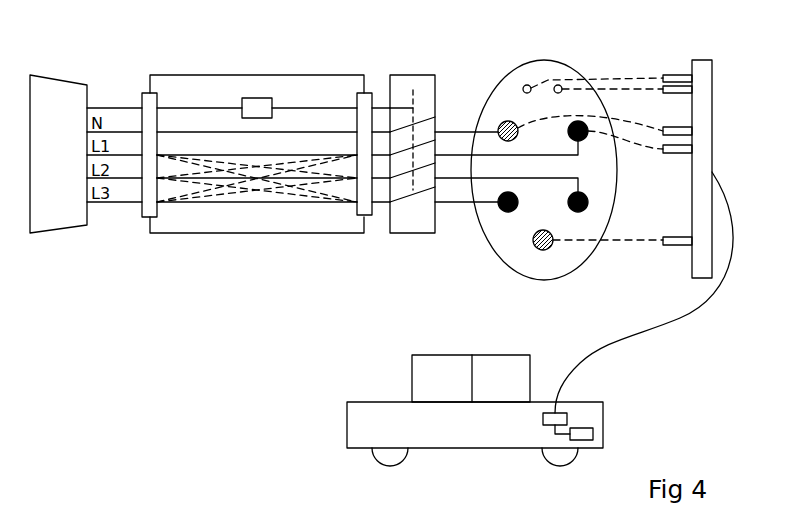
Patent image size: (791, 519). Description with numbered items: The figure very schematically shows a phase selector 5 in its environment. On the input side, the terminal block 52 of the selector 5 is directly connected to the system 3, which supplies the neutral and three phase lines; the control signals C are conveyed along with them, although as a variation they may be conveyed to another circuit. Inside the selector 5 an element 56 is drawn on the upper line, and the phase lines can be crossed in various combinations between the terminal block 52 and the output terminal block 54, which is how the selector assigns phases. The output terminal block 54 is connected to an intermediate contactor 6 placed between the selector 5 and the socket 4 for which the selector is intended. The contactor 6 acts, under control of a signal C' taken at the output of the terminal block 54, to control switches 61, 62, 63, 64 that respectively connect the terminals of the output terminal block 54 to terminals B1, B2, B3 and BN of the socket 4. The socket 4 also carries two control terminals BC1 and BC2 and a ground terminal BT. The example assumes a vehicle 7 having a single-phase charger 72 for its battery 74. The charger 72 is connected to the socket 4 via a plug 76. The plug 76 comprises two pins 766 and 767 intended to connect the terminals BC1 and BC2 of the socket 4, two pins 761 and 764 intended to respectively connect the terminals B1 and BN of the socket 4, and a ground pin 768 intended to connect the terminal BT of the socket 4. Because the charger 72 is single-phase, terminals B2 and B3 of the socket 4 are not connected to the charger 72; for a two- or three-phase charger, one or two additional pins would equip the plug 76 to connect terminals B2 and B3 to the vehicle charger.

The system 3 is at (57, 78).
The control signals C is at (114, 123).
The terminal block 52 is at (148, 93).
The selector 5 is at (333, 75).
The fuse 56 is at (272, 105).
The output terminal block 54 is at (365, 93).
The signal C' is at (395, 116).
The intermediate contactor 6 is at (415, 75).
The switch 61 is at (438, 132).
The switch 62 is at (438, 155).
The switch 63 is at (438, 178).
The switch 64 is at (437, 112).
The socket 4 is at (573, 67).
The terminal BC1 is at (557, 84).
The terminal BC2 is at (522, 85).
The terminal BN is at (519, 129).
The terminal B1 is at (570, 136).
The terminal B2 is at (587, 207).
The terminal B3 is at (501, 210).
The terminal BT is at (533, 245).
The plug 76 is at (703, 63).
The pin 766 is at (678, 75).
The pin 767 is at (662, 87).
The pin 764 is at (663, 135).
The pin 761 is at (672, 153).
The ground pin 768 is at (666, 245).
The vehicle 7 is at (370, 402).
The single-phase charger 72 is at (548, 413).
The battery 74 is at (593, 434).